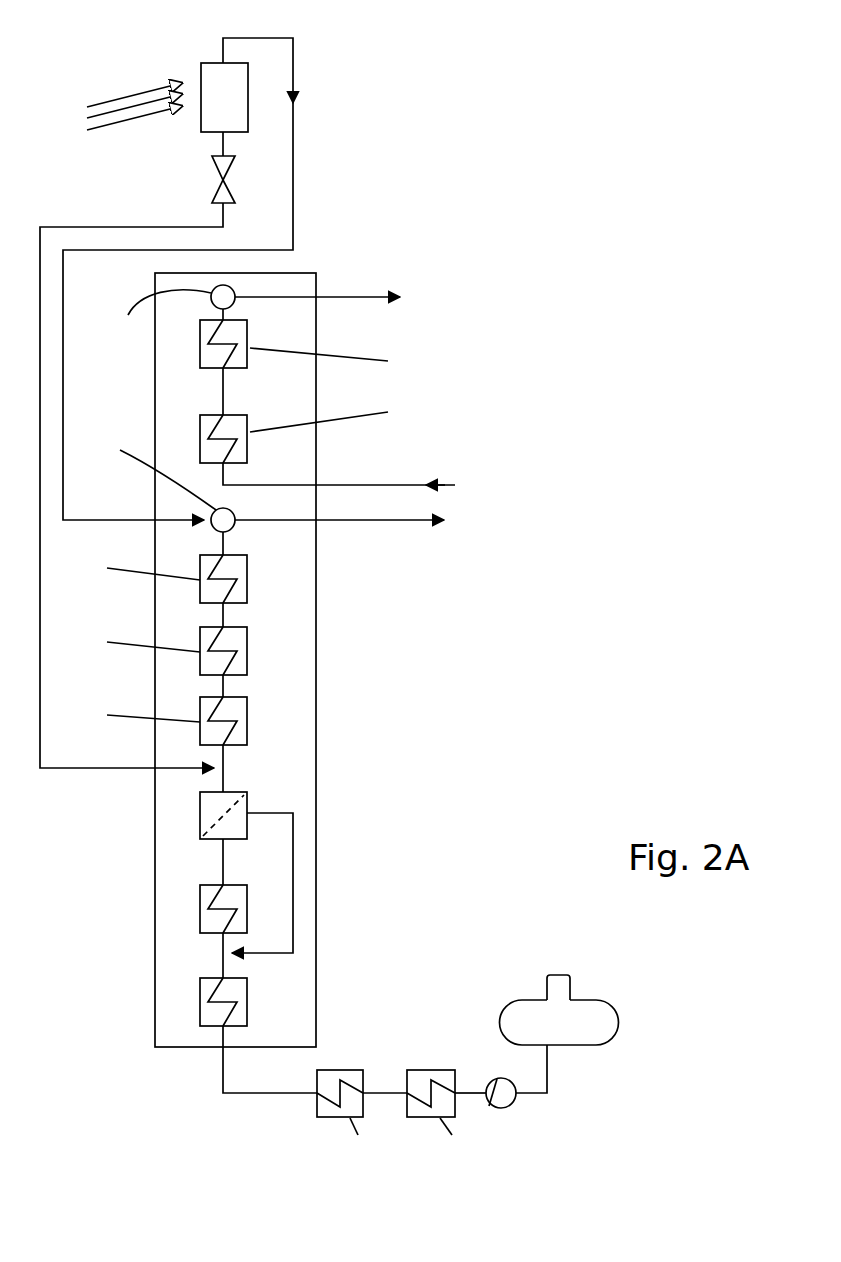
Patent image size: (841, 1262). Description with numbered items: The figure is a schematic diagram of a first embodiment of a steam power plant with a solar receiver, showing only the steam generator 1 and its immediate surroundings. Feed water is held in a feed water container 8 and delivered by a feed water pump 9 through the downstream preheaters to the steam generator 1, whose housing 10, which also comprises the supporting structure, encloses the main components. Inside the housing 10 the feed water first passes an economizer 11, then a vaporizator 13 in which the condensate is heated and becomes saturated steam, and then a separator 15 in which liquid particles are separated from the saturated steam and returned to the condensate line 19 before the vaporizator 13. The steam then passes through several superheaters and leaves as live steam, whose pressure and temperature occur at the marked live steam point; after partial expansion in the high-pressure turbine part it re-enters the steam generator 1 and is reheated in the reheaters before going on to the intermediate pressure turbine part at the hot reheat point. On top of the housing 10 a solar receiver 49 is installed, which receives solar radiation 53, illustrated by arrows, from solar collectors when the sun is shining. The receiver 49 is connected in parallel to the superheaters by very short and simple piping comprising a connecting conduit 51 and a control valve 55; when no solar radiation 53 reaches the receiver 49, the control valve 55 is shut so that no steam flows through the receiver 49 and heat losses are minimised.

The steam generator 1 is at (409, 716).
The feed water container 8 is at (596, 1046).
The feed water pump 9 is at (511, 1105).
The housing 10 is at (152, 955).
The economizer 11 is at (250, 993).
The vaporizator 13 is at (200, 898).
The separator 15 is at (200, 815).
The condensate line 19 is at (268, 1098).
The solar receiver 49 is at (211, 63).
The connecting conduit 51 is at (296, 130).
The solar radiation 53 is at (122, 99).
The control valve 55 is at (212, 165).